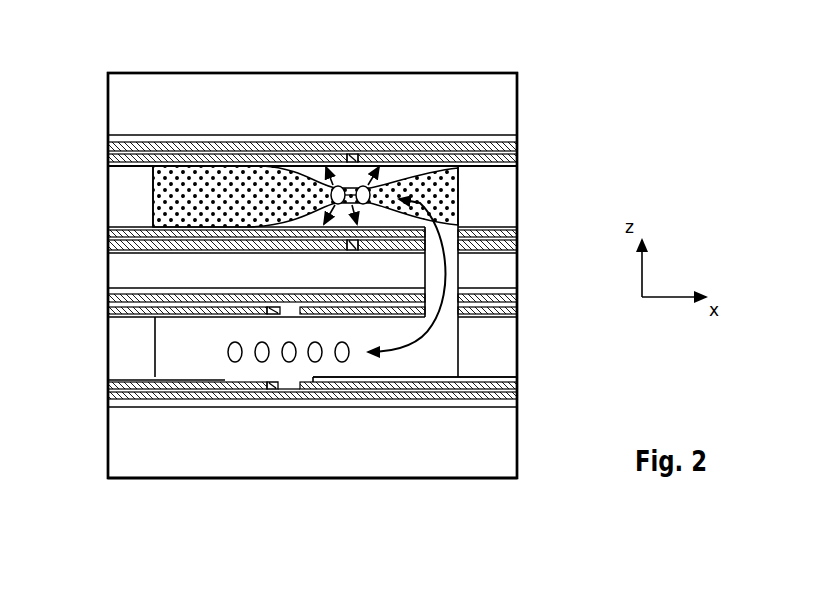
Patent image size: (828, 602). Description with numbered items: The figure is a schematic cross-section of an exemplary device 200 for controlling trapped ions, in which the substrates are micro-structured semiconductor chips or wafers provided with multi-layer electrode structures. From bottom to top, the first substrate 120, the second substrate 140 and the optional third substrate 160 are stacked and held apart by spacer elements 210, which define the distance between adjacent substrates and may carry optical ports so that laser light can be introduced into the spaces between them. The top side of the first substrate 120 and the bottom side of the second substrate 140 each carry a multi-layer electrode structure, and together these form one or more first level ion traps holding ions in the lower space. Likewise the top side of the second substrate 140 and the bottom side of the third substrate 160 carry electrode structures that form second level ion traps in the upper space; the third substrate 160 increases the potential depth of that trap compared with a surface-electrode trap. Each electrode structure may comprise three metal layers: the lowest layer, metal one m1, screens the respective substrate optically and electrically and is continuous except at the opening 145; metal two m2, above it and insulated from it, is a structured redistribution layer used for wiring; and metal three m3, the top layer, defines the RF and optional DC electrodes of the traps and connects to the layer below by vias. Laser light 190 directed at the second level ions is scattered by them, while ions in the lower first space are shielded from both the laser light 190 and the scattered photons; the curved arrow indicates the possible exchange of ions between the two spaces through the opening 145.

The device for controlling trapped ions 200 is at (569, 58).
The third substrate 160 is at (521, 73).
The spacer elements 210 is at (112, 188).
The laser light 190 is at (198, 183).
The second substrate 140 is at (521, 227).
The opening 145 is at (450, 302).
The first substrate 120 is at (521, 377).
The metal 1 m1 is at (283, 406).
The metal 2 m2 is at (331, 392).
The metal 3 m3 is at (377, 380).